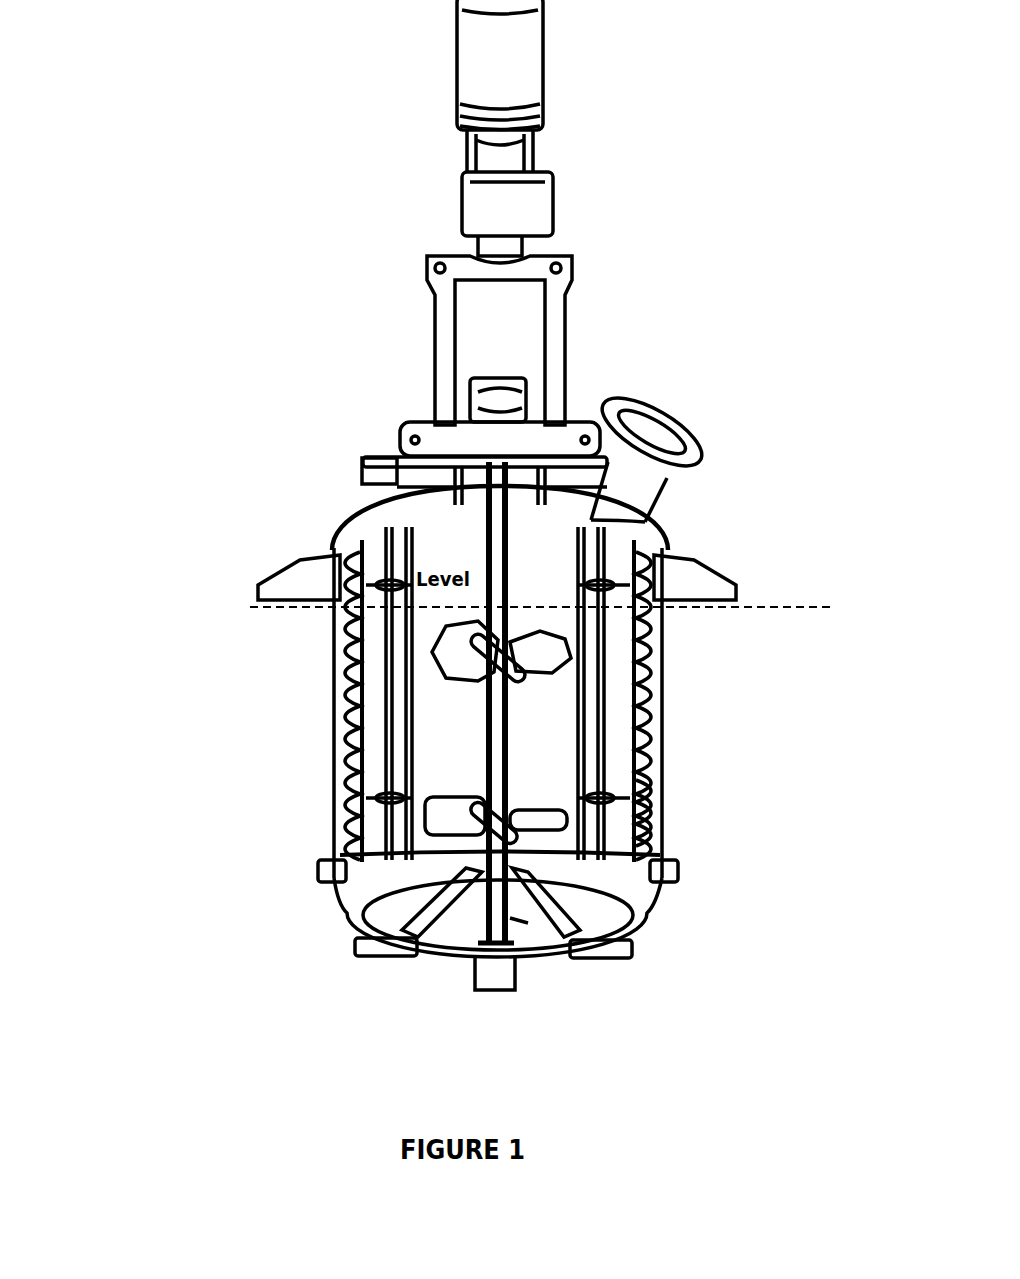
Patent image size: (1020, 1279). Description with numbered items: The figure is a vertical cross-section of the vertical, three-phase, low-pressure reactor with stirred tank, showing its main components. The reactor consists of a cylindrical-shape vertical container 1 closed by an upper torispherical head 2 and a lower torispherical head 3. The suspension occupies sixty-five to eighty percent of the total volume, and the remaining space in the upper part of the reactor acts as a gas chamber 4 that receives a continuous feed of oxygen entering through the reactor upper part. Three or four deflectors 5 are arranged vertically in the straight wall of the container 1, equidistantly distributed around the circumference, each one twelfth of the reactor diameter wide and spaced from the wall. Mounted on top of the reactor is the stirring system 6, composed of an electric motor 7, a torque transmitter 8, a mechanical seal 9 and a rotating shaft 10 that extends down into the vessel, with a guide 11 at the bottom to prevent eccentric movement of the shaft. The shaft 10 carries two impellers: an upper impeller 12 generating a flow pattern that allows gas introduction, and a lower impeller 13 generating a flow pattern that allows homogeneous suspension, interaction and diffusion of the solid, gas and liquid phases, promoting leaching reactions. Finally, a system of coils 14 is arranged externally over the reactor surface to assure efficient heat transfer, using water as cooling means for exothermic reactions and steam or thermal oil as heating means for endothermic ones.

The cylindrical-shape vertical container 1 is at (290, 690).
The upper torispherical head 2 is at (362, 512).
The lower torispherical head 3 is at (350, 910).
The gas chamber 4 is at (548, 563).
The deflectors 5 is at (400, 740).
The stirring system 6 is at (415, 330).
The electric motor 7 is at (548, 62).
The torque transmitter 8 is at (556, 210).
The mechanical seal 9 is at (520, 408).
The rotating shaft 10 is at (488, 565).
The guide 11 is at (630, 960).
The upper impeller 12 is at (568, 655).
The lower impeller 13 is at (425, 820).
The system of coils 14 is at (640, 811).